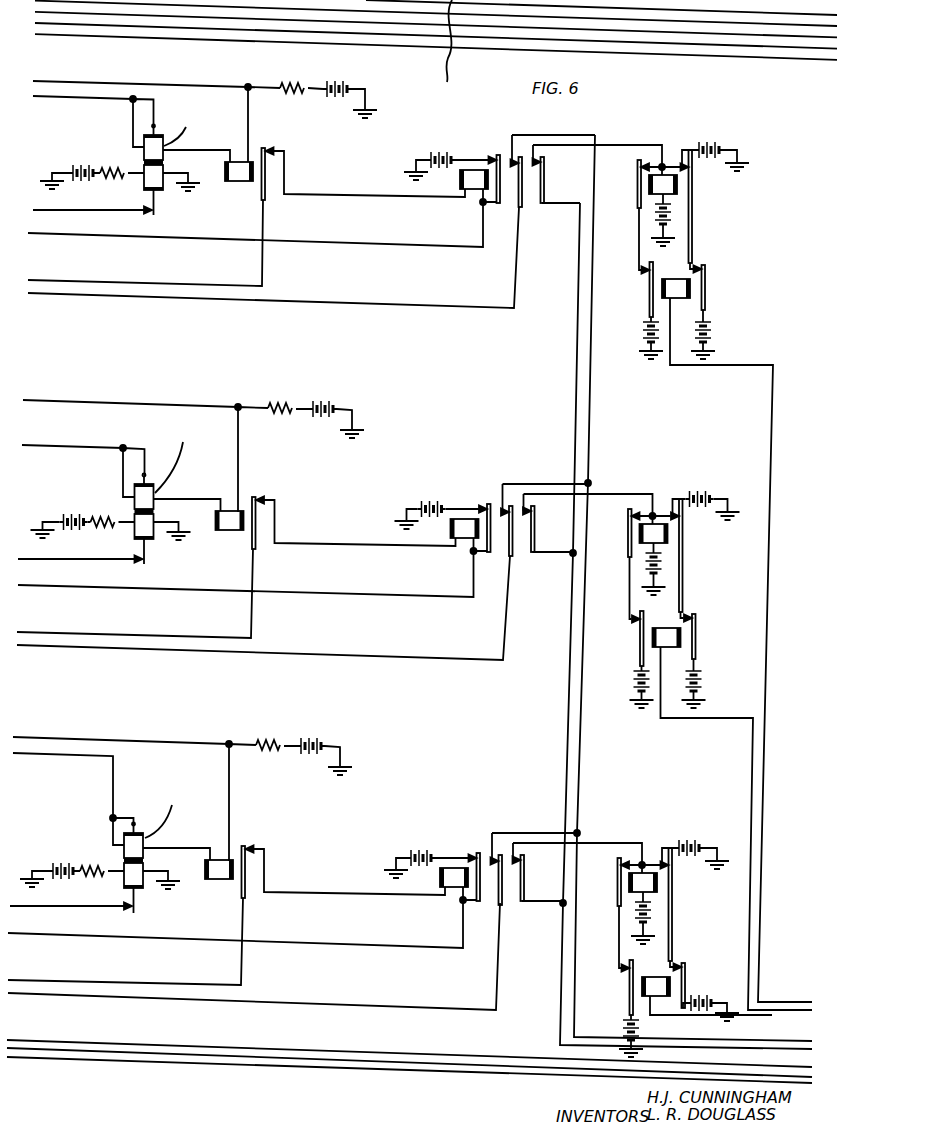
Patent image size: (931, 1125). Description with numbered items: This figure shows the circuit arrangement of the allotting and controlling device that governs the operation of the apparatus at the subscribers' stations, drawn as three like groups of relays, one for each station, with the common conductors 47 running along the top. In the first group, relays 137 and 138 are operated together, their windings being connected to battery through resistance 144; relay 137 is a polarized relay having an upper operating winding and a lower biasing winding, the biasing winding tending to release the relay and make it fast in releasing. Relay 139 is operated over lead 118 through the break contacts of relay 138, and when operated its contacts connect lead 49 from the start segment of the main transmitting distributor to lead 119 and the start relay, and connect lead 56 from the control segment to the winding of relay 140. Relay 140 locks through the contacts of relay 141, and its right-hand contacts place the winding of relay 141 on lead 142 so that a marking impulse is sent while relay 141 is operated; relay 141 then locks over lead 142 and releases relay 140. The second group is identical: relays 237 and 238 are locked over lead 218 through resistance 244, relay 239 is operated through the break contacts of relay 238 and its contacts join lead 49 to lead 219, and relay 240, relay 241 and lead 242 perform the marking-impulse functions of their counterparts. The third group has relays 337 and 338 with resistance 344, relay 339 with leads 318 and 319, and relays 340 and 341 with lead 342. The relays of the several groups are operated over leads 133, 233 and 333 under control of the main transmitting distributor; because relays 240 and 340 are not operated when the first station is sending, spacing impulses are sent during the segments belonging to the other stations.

The cable conductors 47 is at (448, 51).
The lead 49 is at (695, 1040).
The lead 56 is at (635, 1048).
The lead 118 is at (68, 280).
The lead 119 is at (60, 296).
The lead 133 is at (152, 1063).
The polarized relay 137 is at (144, 155).
The relay 138 is at (229, 182).
The relay 139 is at (466, 170).
The relay 140 is at (668, 175).
The relay 141 is at (662, 290).
The lead 142 is at (737, 366).
The resistance 144 is at (297, 94).
The lead 218 is at (135, 593).
The lead 219 is at (263, 617).
The lead 233 is at (105, 1055).
The polarized relay 237 is at (142, 494).
The relay 238 is at (223, 539).
The relay 239 is at (484, 510).
The relay 240 is at (655, 542).
The relay 241 is at (640, 638).
The lead 242 is at (737, 828).
The resistance 244 is at (288, 429).
The lead 318 is at (125, 941).
The lead 319 is at (254, 962).
The lead 333 is at (36, 1046).
The polarized relay 337 is at (138, 850).
The relay 338 is at (208, 891).
The relay 339 is at (470, 862).
The relay 340 is at (645, 889).
The relay 341 is at (633, 987).
The lead 342 is at (711, 1019).
The resistance 344 is at (277, 766).